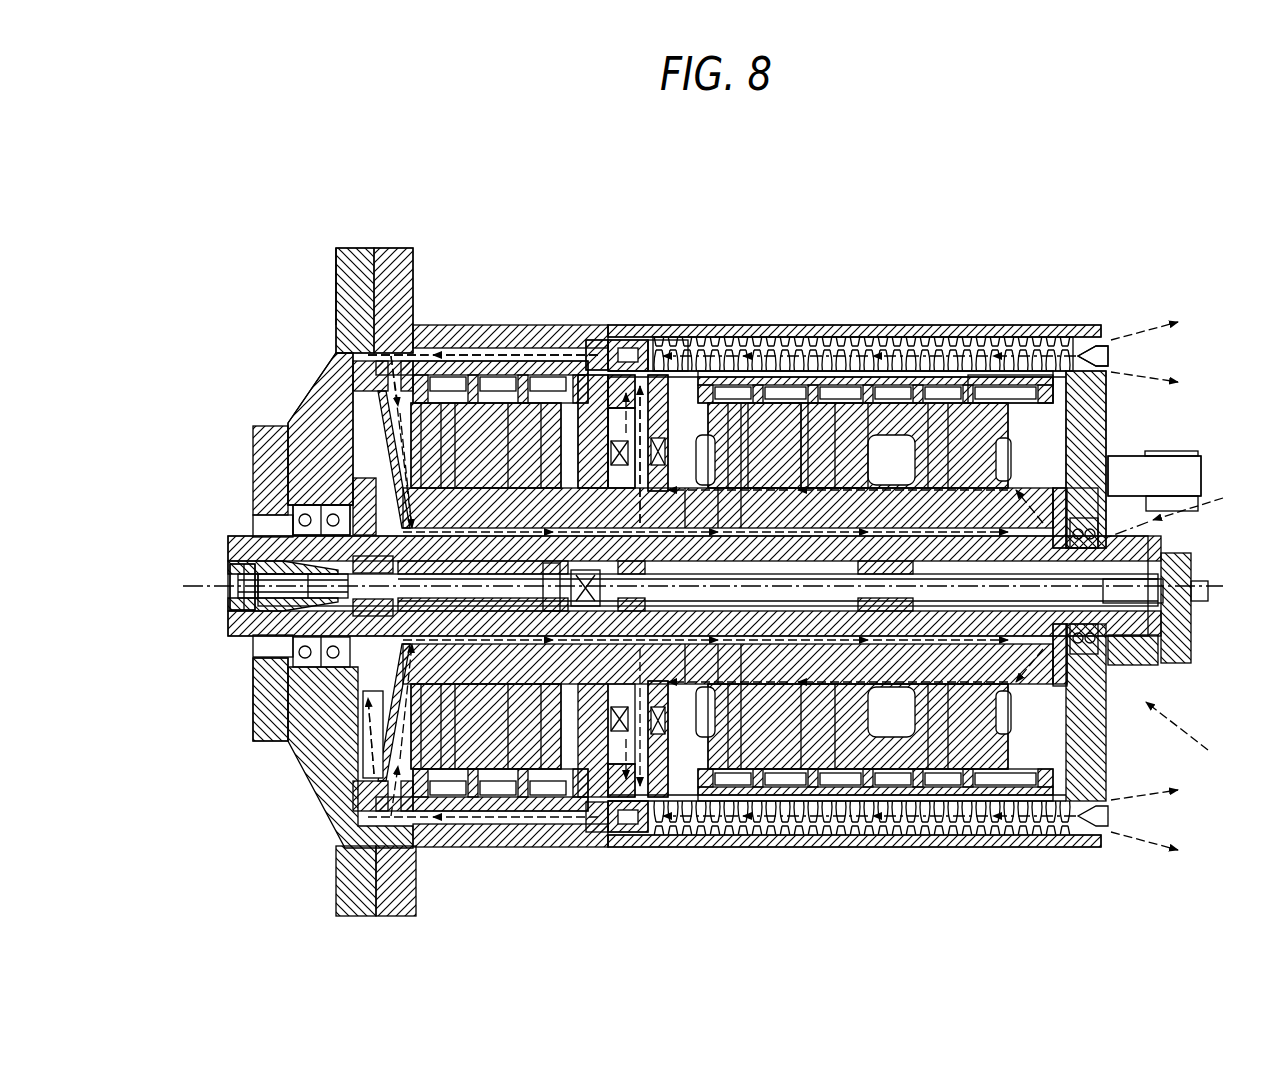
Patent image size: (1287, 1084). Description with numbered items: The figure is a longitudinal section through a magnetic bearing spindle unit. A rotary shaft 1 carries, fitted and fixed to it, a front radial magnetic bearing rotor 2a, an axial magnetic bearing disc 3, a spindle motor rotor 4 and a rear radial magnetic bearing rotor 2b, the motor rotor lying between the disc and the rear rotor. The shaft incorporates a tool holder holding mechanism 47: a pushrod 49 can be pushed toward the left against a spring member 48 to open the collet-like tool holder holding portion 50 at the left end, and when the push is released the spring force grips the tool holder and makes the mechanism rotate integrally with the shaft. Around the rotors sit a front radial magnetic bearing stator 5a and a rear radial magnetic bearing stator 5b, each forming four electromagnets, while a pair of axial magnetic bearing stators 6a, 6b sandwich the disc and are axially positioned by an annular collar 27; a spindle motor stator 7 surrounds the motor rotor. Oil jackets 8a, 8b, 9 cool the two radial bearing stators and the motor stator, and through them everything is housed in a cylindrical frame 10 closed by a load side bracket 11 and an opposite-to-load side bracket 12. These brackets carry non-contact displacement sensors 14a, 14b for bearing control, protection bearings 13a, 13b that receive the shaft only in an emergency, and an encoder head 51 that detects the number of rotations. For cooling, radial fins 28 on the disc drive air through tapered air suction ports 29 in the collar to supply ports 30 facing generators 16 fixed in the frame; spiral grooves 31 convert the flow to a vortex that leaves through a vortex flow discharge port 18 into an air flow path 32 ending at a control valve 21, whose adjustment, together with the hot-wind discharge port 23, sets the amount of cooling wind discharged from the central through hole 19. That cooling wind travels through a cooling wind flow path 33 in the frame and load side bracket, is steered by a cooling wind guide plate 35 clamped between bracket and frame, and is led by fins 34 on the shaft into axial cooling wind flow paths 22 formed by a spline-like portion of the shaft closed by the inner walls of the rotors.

The rotary shaft 1 is at (222, 535).
The front radial magnetic bearing rotor 2a is at (330, 395).
The rear radial magnetic bearing rotor 2b is at (985, 395).
The axial magnetic bearing disc 3 is at (582, 440).
The spindle motor rotor 4 is at (790, 500).
The front radial magnetic bearing stator 5a is at (455, 398).
The rear radial magnetic bearing stator 5b is at (945, 395).
The load side axial magnetic bearing stator 6a is at (555, 470).
The opposite-to-load side axial magnetic bearing stator 6b is at (700, 332).
The spindle motor stator 7 is at (835, 495).
The oil jacket for cooling the front radial magnetic bearing stator 8a is at (500, 765).
The oil jacket for cooling the rear radial magnetic bearing stator 8b is at (910, 795).
The oil jacket for cooling the spindle motor stator 9 is at (745, 840).
The cylindrical frame 10 is at (383, 245).
The load side bracket 11 is at (328, 265).
The opposite-to-load side bracket 12 is at (1045, 317).
The protection bearing 13a is at (280, 700).
The protection bearing 13b is at (1090, 672).
The non-contact displacement sensor 14a is at (297, 497).
The non-contact displacement sensor 14b is at (1075, 515).
The generator 16 is at (615, 332).
The vortex flow discharge port 18 is at (650, 332).
The through hole 19 is at (630, 332).
The control valve 21 is at (1102, 347).
The cooling wind flow path 22 is at (810, 690).
The hot-wind discharge port 23 is at (1088, 332).
The annular collar 27 is at (605, 332).
The radial fins 28 is at (623, 795).
The air suction port 29 is at (590, 332).
The supply port 30 is at (660, 332).
The spiral grooves 31 is at (642, 332).
The air flow path 32 is at (762, 332).
The cooling wind flow path 33 is at (355, 347).
The fins 34 is at (355, 660).
The cooling wind guide plate 35 is at (370, 375).
The tool holder holding mechanism 47 is at (462, 680).
The spring member 48 is at (603, 800).
The pushrod 49 is at (655, 785).
The tool holder holding portion 50 is at (228, 596).
The encoder head 51 is at (1195, 467).